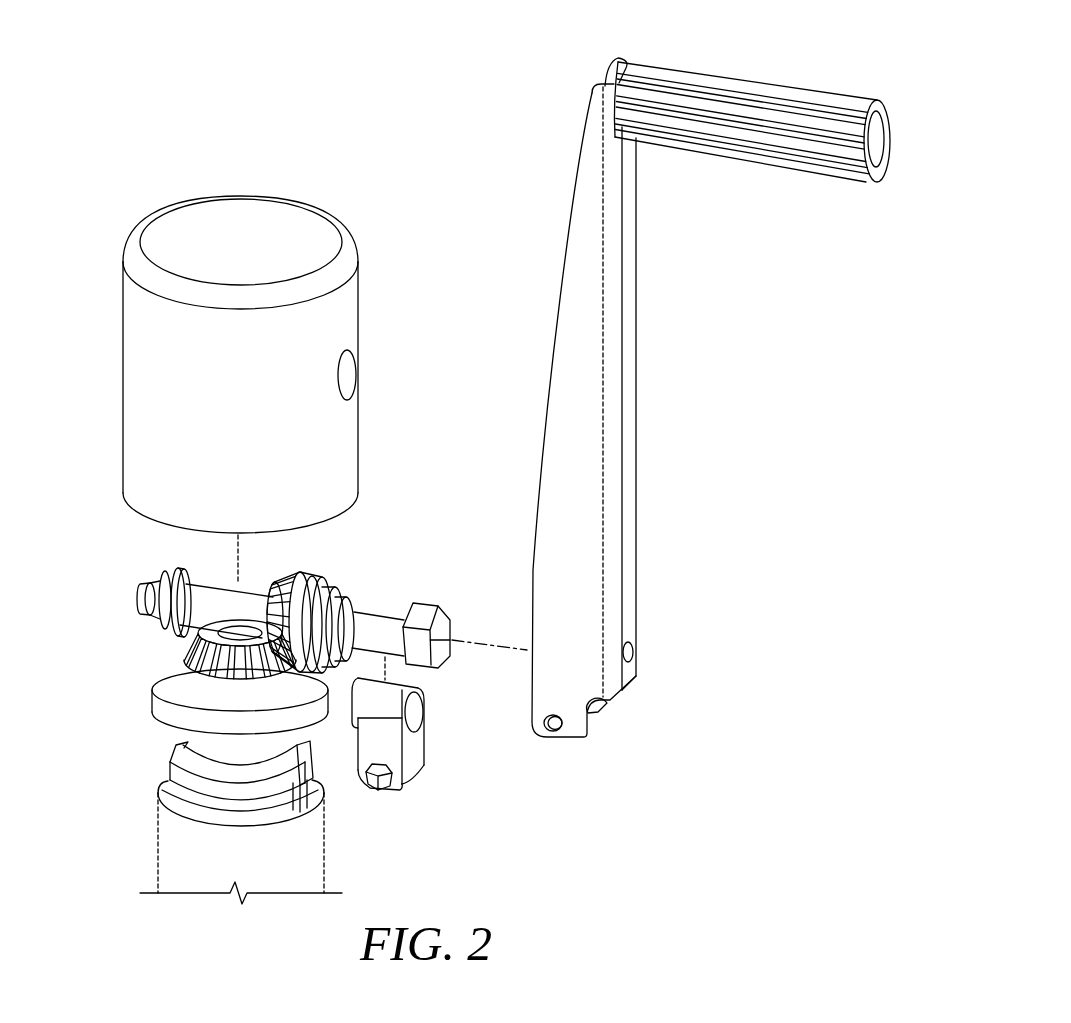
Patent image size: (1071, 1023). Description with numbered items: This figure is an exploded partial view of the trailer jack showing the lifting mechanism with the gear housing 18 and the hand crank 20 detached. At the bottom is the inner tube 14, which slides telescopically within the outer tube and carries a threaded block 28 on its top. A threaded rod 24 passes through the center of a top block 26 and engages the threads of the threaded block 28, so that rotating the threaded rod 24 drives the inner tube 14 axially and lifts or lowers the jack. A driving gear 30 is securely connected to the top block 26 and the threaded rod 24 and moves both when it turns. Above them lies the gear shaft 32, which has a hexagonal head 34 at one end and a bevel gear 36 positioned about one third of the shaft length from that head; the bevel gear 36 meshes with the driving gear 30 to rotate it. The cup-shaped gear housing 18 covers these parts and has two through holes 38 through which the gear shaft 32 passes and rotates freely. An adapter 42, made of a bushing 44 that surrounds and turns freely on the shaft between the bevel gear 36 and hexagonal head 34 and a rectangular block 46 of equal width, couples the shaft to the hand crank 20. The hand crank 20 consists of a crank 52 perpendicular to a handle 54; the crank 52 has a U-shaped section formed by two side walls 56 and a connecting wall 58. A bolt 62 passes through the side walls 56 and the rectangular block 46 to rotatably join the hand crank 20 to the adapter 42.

The inner tube 14 is at (177, 847).
The gear housing 18 is at (158, 383).
The hand crank 20 is at (703, 402).
The threaded rod 24 is at (240, 632).
The top block 26 is at (168, 688).
The threaded block 28 is at (176, 752).
The driving gear 30 is at (180, 645).
The gear shaft 32 is at (205, 592).
The hexagonal head 34 is at (428, 607).
The bevel gear 36 is at (300, 572).
The through holes 38 is at (347, 383).
The adapter 42 is at (414, 770).
The bushing 44 is at (420, 693).
The rectangular block 46 is at (408, 758).
The crank 52 is at (620, 320).
The handle 54 is at (752, 140).
The side walls 56 is at (600, 705).
The connecting wall 58 is at (628, 604).
The bolt 62 is at (374, 782).